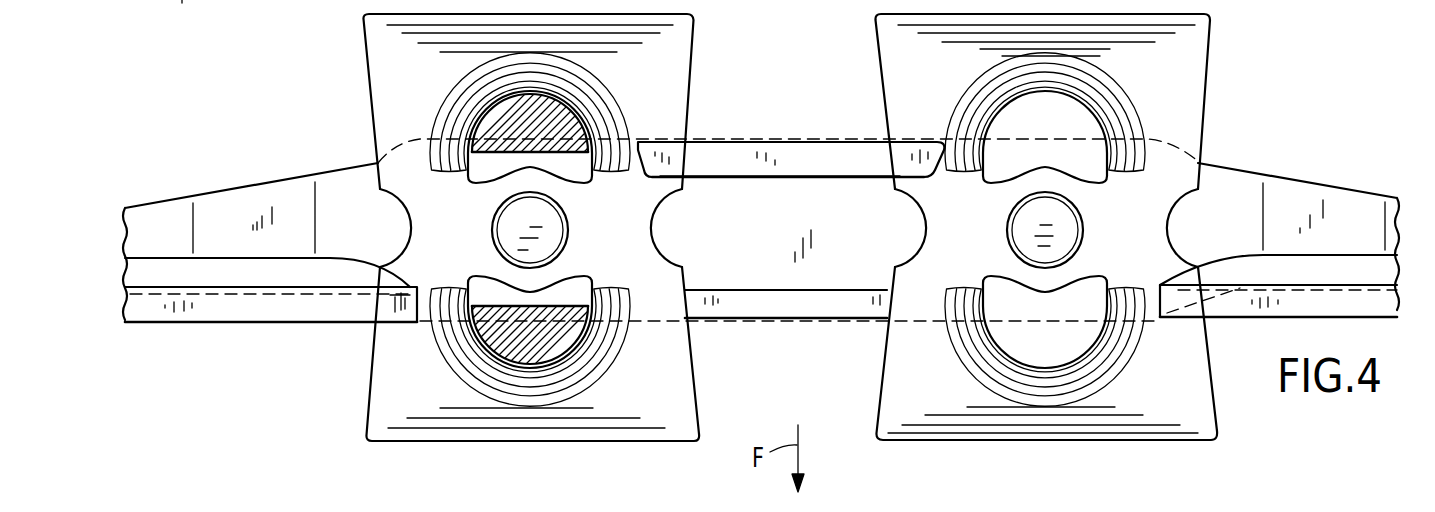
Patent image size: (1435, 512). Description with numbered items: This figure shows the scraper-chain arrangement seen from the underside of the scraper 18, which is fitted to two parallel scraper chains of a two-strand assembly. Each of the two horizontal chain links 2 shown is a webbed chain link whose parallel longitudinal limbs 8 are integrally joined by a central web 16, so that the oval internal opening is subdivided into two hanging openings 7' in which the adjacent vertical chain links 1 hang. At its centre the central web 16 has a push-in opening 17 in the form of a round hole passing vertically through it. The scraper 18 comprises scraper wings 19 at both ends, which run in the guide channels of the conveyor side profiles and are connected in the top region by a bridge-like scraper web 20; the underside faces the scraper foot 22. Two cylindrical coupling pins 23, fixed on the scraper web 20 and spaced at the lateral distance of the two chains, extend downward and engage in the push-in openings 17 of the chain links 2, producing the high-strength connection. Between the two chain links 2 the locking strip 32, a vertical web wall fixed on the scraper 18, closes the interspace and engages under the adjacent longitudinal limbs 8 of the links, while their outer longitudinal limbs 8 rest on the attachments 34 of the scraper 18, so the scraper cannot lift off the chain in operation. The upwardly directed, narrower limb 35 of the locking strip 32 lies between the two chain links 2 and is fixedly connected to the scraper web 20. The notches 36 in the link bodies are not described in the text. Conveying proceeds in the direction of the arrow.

The vertical chain link 1 is at (517, 120).
The horizontal chain link 2 is at (390, 407).
The hanging opening 7' is at (838, 277).
The longitudinal limb 8 is at (377, 360).
The central web 16 is at (522, 182).
The push-in opening 17 is at (567, 250).
The scraper 18 is at (232, 282).
The scraper wing 19 is at (162, 223).
The scraper web 20 is at (775, 307).
The scraper foot 22 is at (175, 20).
The coupling pin 23 is at (513, 238).
The locking strip 32 is at (829, 156).
The attachment 34 is at (400, 300).
The narrower limb of locking strip 35 is at (730, 172).
The semicircular notch 36 is at (393, 222).